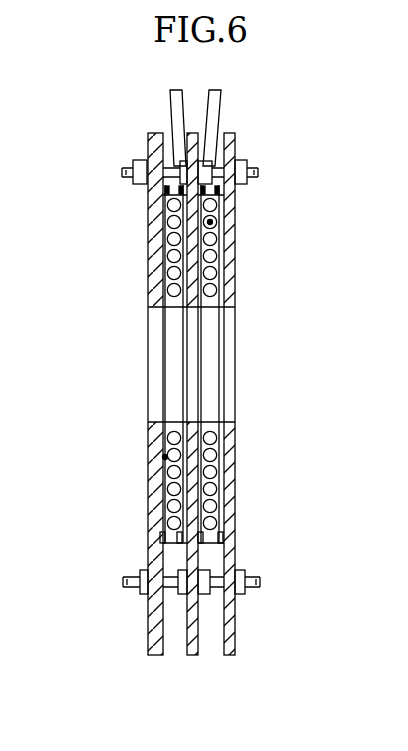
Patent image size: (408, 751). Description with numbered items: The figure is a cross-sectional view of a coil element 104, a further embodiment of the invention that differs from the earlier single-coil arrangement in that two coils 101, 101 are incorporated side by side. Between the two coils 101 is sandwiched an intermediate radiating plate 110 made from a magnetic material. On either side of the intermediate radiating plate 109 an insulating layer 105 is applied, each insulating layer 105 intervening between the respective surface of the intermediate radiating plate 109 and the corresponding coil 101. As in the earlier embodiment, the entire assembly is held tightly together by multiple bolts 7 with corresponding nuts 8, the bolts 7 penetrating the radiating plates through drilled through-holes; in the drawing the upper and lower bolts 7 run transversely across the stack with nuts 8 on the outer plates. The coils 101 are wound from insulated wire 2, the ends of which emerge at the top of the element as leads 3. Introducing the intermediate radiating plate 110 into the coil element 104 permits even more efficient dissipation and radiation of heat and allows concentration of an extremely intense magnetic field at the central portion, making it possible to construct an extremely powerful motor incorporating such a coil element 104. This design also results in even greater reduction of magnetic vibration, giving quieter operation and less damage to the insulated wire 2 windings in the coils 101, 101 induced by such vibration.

The insulated wire 2 is at (172, 224).
The conductor wire 3 is at (174, 112).
The bolt 7 is at (212, 572).
The nut 8 is at (240, 592).
The coil 101 is at (212, 222).
The coil element 104 is at (202, 413).
The insulating layer 105 is at (166, 272).
The intermediate radiating plate 109 is at (153, 646).
The intermediate radiating plate 110 is at (196, 655).